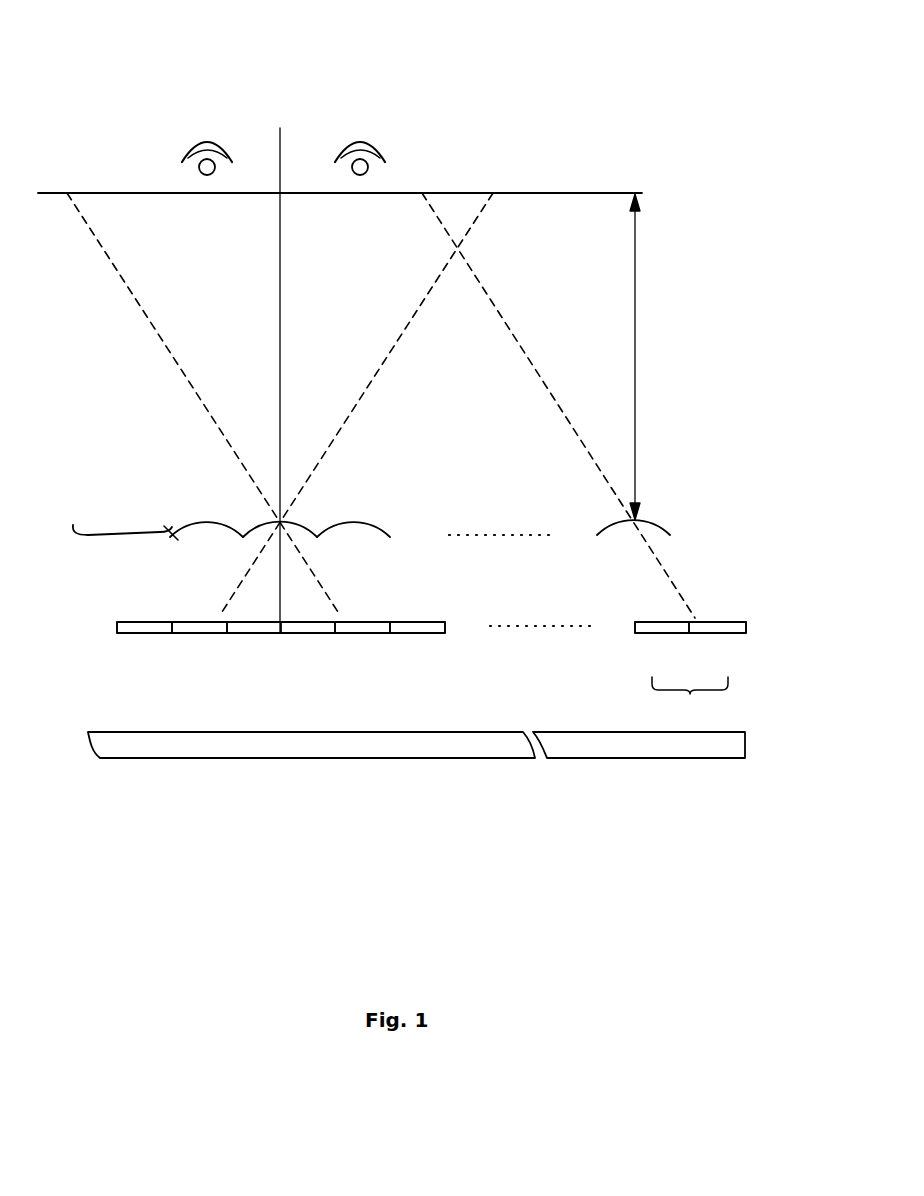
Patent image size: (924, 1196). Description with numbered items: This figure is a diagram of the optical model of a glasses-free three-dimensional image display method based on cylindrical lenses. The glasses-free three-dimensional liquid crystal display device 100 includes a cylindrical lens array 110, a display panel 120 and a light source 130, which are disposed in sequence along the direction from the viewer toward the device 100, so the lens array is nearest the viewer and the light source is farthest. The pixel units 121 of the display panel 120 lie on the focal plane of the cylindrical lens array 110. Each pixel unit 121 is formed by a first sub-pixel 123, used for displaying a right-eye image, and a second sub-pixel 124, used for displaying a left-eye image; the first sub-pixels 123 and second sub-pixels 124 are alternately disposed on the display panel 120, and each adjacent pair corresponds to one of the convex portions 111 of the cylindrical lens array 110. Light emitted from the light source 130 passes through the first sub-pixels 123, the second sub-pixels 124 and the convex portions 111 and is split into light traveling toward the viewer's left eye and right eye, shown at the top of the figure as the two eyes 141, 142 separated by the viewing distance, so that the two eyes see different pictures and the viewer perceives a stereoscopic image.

The glasses-free 3D liquid crystal display device 100 is at (75, 43).
The cylindrical lens array 110 is at (114, 518).
The convex portion 111 is at (212, 522).
The display panel 120 is at (740, 602).
The pixel unit 121 is at (690, 698).
The first sub-pixel 123 is at (196, 626).
The second sub-pixel 124 is at (141, 626).
The light source 130 is at (731, 748).
The left eye 141 is at (207, 144).
The right eye 142 is at (360, 144).